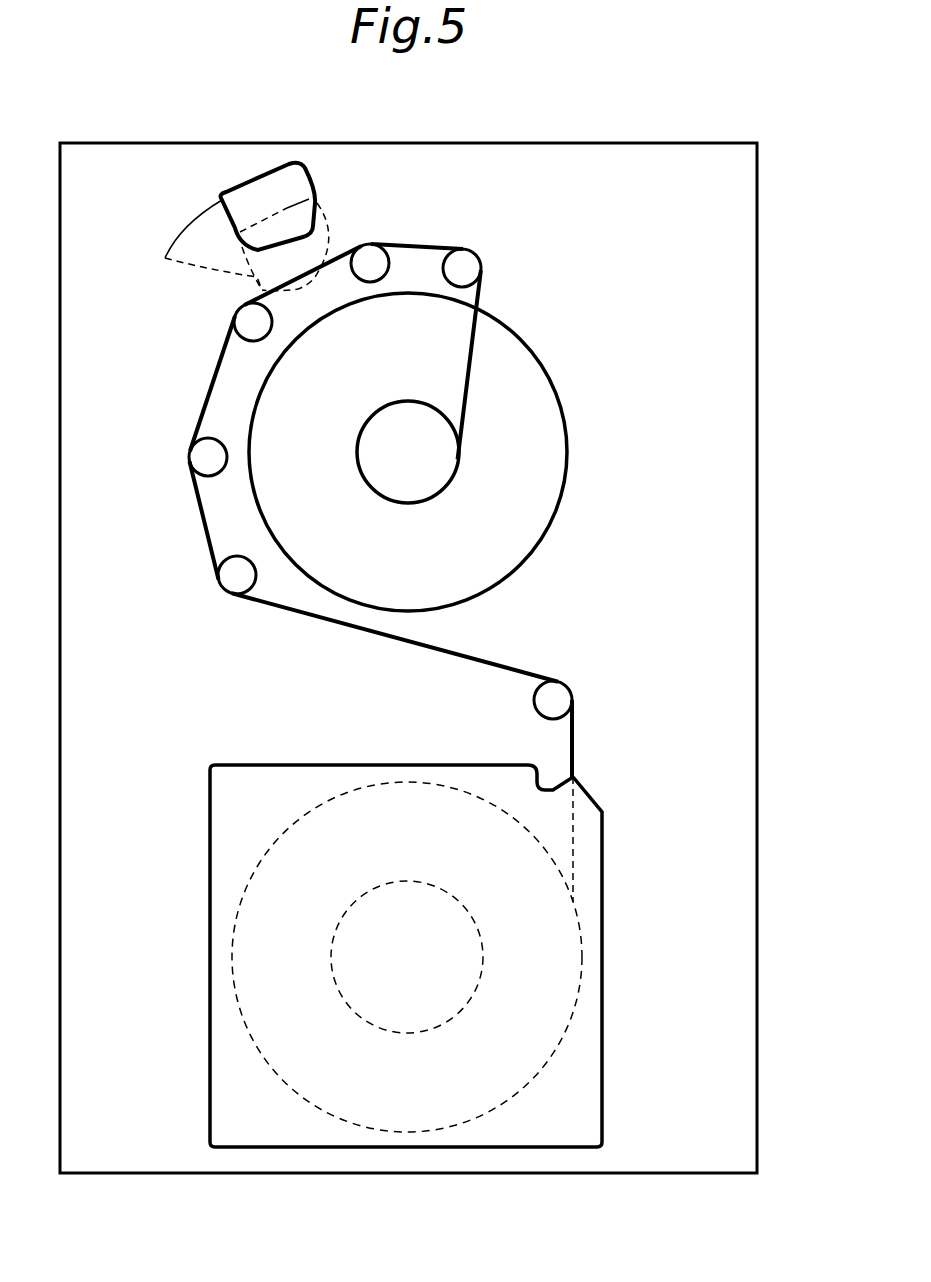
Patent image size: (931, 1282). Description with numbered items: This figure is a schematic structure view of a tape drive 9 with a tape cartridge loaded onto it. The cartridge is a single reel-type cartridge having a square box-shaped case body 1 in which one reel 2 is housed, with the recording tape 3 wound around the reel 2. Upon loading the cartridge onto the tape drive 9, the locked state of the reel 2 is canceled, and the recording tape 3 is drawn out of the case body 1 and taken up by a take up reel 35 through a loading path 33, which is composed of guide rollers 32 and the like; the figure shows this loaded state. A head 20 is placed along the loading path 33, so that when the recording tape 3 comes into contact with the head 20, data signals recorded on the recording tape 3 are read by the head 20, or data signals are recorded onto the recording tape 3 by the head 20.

The case body 1 is at (367, 956).
The reel 2 is at (482, 940).
The recording tape 3 is at (402, 643).
The tape drive 9 is at (781, 527).
The head 20 is at (226, 227).
The guide rollers 32 is at (217, 457).
The loading path 33 is at (325, 510).
The take up reel 35 is at (545, 443).